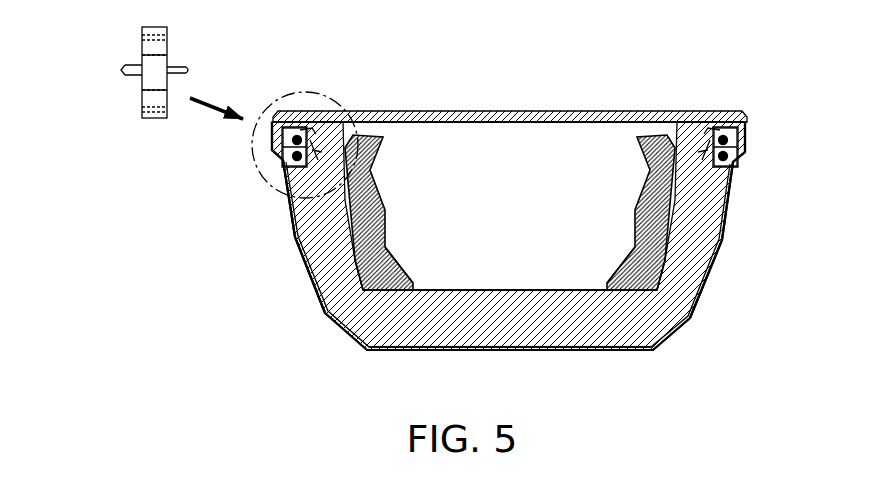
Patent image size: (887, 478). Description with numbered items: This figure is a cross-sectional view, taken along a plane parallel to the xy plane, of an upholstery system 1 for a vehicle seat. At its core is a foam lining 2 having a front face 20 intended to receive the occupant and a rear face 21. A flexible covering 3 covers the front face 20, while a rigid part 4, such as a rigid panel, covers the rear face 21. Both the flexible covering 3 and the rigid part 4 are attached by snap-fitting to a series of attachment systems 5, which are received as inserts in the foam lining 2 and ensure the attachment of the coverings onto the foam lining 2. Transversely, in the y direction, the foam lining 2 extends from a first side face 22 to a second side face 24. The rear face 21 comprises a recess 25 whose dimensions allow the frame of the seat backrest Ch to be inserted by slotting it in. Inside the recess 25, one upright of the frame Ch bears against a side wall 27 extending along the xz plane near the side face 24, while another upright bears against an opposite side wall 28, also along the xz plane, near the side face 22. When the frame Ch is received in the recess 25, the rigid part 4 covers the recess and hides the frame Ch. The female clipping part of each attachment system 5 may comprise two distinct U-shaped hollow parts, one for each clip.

The upholstery system 1 is at (753, 340).
The foam lining 2 is at (698, 237).
The flexible covering 3 is at (575, 351).
The rigid part 4 is at (506, 110).
The attachment system 5 is at (117, 98).
The front face 20 is at (620, 352).
The rear face 21 is at (591, 136).
The side face 22 is at (266, 190).
The side face 24 is at (752, 188).
The recess 25 is at (511, 222).
The side wall 27 is at (668, 252).
The side wall 28 is at (350, 253).
The frame of the seat backrest Ch is at (375, 268).